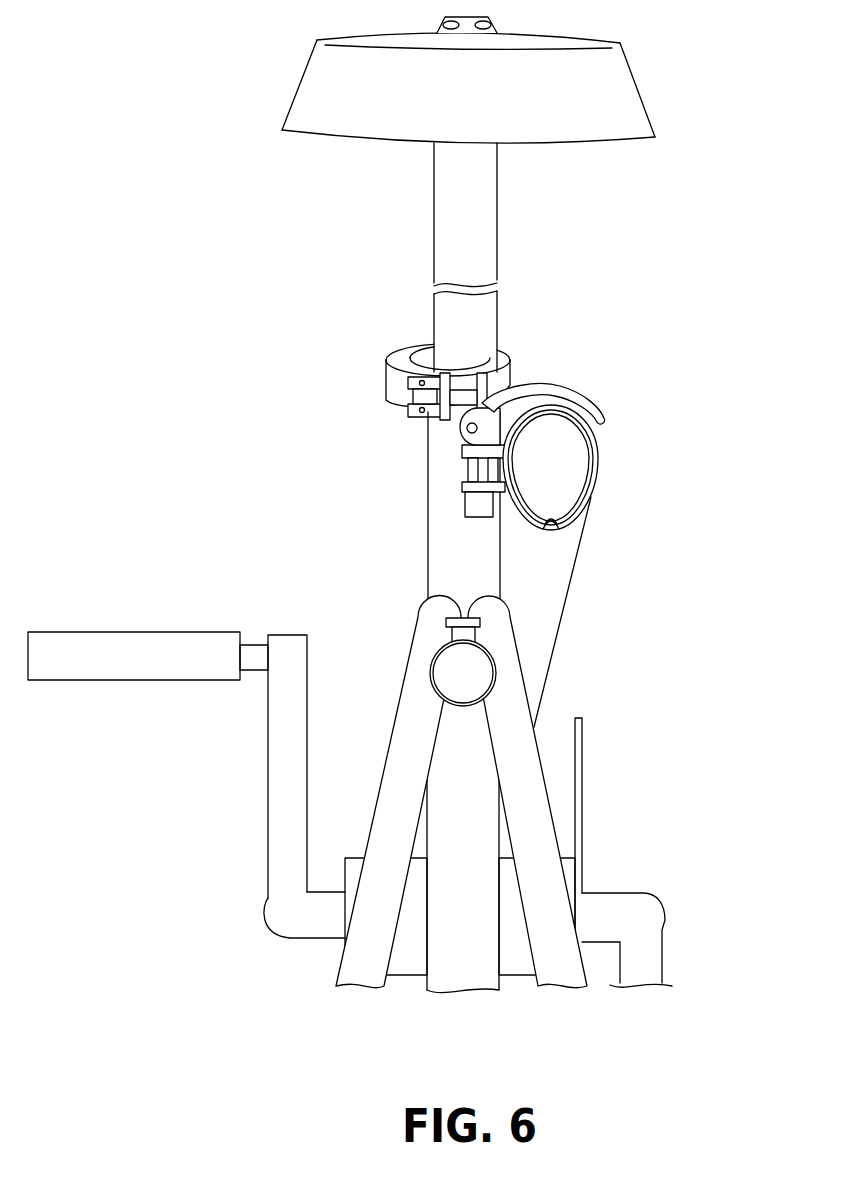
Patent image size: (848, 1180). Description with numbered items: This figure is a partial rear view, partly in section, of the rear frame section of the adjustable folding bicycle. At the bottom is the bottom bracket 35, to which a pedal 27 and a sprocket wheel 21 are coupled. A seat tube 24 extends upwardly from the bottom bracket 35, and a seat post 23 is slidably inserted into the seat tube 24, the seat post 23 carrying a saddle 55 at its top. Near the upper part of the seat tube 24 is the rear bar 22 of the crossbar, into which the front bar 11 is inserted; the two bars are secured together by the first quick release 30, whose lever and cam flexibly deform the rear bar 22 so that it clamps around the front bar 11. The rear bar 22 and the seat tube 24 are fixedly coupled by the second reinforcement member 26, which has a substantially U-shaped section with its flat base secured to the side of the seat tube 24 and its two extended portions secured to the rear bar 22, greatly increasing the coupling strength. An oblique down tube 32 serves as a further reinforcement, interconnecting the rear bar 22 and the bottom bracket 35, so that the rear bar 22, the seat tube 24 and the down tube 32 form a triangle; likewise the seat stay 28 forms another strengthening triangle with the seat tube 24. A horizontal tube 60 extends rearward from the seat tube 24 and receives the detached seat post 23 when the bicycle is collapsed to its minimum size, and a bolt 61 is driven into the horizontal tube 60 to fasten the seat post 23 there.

The saddle 55 is at (622, 72).
The seat post 23 is at (487, 250).
The seat tube 24 is at (437, 478).
The second reinforcement member 26 is at (516, 408).
The first quick release 30 is at (603, 391).
The rear bar 22 is at (598, 453).
The front bar 11 is at (597, 480).
The down tube 32 is at (557, 573).
The pedal 27 is at (155, 640).
The bolt 61 is at (447, 623).
The horizontal tube 60 is at (497, 668).
The seat stay 28 is at (402, 700).
The sprocket wheel 21 is at (578, 827).
The bottom bracket 35 is at (408, 963).